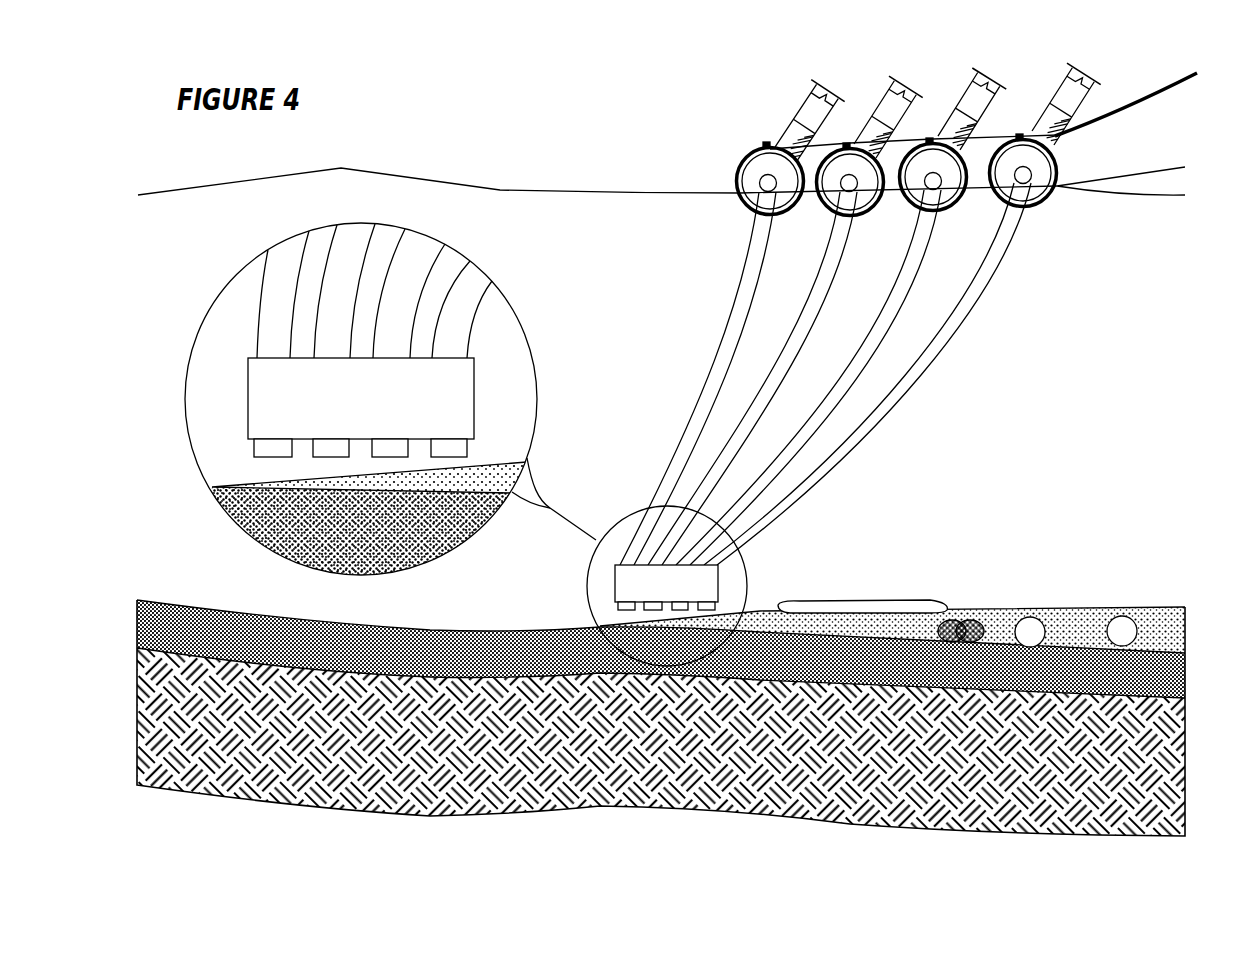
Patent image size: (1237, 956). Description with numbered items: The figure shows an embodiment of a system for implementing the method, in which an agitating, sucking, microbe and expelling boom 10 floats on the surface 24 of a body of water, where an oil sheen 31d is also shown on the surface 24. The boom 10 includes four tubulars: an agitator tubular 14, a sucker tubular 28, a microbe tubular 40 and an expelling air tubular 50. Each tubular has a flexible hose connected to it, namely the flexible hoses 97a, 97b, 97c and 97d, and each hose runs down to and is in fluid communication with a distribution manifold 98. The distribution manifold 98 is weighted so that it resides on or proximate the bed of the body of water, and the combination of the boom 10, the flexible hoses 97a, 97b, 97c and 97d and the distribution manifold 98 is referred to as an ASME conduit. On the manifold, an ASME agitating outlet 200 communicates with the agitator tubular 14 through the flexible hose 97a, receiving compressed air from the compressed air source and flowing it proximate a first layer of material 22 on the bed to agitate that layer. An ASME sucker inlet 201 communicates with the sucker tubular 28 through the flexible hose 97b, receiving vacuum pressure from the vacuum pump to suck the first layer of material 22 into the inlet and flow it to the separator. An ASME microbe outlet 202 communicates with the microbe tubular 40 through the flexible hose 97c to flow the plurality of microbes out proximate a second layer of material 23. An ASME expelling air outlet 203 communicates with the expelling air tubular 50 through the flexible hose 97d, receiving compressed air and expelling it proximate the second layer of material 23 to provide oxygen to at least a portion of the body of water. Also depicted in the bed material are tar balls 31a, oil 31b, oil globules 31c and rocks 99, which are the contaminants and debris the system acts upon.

The agitating, sucking, microbe and expelling boom 10 is at (736, 130).
The surface 24 is at (508, 192).
The oil sheen 31d is at (1166, 178).
The expelling air tubular 50 is at (741, 200).
The microbe tubular 40 is at (825, 204).
The sucker tubular 28 is at (908, 203).
The agitator tubular 14 is at (1047, 201).
The flexible hose 97a is at (924, 362).
The flexible hose 97b is at (888, 315).
The flexible hose 97c is at (814, 309).
The flexible hose 97d is at (745, 295).
The distribution manifold 98 is at (263, 401).
The ASME agitating outlet 200 is at (459, 446).
The ASME sucker inlet 201 is at (384, 457).
The ASME microbe outlet 202 is at (326, 457).
The ASME expelling air outlet 203 is at (268, 457).
The tar balls 31a is at (1031, 617).
The oil 31b is at (863, 605).
The oil globules 31c is at (1122, 616).
The rocks 99 is at (972, 618).
The first layer of material 22 is at (1204, 607).
The second layer of material 23 is at (1204, 653).